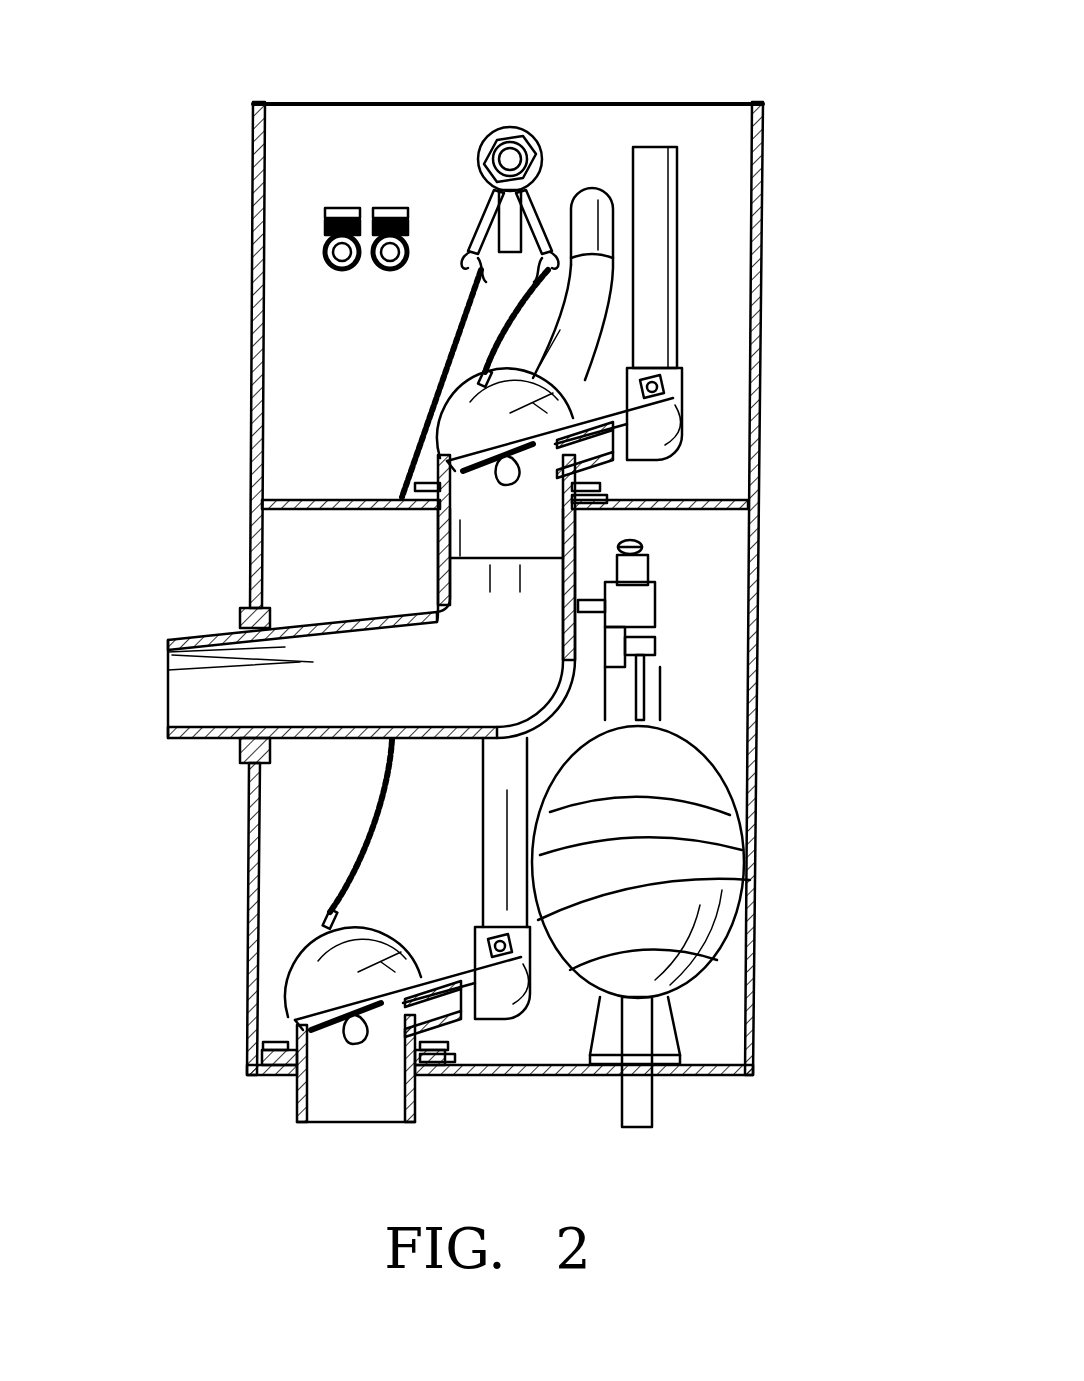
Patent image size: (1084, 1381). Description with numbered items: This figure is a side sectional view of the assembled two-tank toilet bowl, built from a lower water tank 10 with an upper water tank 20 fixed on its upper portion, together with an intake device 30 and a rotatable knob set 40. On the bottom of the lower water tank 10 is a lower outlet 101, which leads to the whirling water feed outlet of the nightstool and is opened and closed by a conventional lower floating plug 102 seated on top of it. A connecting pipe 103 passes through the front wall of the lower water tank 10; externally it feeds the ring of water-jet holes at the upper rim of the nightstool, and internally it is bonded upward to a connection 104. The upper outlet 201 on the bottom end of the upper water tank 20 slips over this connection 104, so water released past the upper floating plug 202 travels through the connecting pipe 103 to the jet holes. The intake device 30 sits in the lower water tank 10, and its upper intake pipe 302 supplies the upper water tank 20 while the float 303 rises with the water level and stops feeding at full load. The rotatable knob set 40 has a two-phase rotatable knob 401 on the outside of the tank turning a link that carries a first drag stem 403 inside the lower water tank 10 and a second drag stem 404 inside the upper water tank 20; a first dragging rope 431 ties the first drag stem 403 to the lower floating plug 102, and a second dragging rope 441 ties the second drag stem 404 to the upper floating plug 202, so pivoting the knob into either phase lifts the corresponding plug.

The lower water tank 10 is at (755, 1012).
The upper water tank 20 is at (764, 165).
The intake device 30 is at (640, 1100).
The rotatable knob set 40 is at (493, 141).
The two phase rotatable knob 401 is at (503, 215).
The first drag stem 403 is at (478, 233).
The second drag stem 404 is at (556, 250).
The first draging rope 431 is at (467, 327).
The second draging rope 441 is at (585, 292).
The lower outlet 101 is at (290, 1093).
The lower floating plug 102 is at (333, 975).
The connecting pipe 103 is at (213, 685).
The connection 104 is at (440, 548).
The upper outlet 201 is at (527, 542).
The upper floating plug 202 is at (572, 385).
The upper intake pipe 302 is at (588, 325).
The float 303 is at (720, 883).